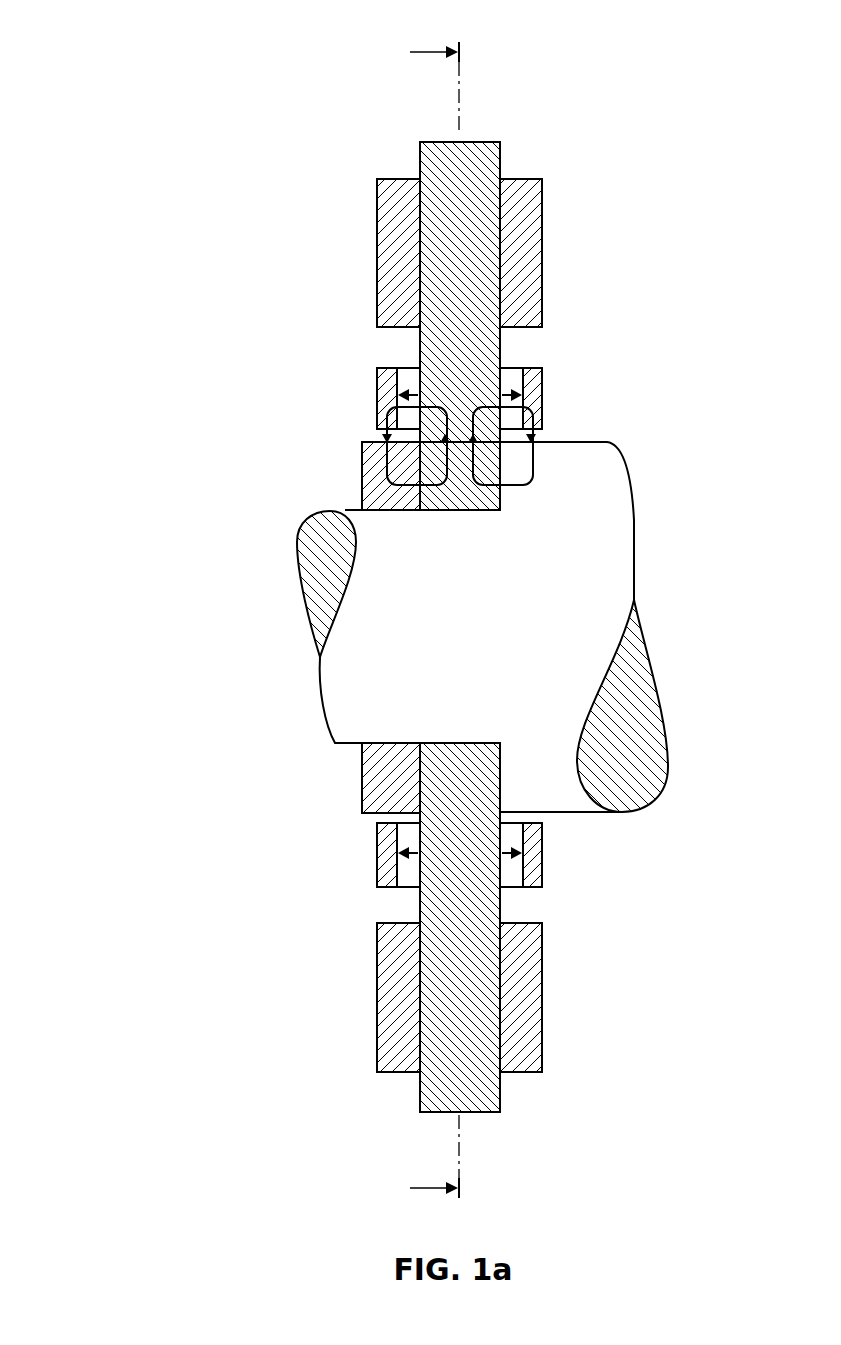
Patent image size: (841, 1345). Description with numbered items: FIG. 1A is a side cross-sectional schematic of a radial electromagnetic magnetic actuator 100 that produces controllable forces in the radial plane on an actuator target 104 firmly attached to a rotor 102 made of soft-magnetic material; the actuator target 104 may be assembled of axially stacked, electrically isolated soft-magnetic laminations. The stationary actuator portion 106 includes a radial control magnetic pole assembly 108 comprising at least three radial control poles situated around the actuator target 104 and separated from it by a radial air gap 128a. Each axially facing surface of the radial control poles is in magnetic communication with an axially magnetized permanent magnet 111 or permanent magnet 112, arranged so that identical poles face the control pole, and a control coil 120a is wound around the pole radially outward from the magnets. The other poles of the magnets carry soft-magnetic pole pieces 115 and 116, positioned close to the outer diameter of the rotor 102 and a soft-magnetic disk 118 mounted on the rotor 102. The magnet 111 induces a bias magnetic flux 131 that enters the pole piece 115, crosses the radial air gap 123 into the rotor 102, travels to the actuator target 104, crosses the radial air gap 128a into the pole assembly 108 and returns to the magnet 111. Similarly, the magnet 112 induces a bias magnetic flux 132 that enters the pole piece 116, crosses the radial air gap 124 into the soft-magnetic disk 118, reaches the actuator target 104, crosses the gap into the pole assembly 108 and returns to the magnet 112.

The magnetic actuator 100 is at (147, 46).
The rotor 102 is at (563, 560).
The actuator target 104 is at (460, 490).
The stationary actuator portion 106 is at (345, 152).
The radial control magnetic pole assembly 108 is at (483, 165).
The permanent magnet 111 is at (512, 373).
The permanent magnet 112 is at (403, 373).
The soft-magnetic pole piece 115 is at (536, 400).
The soft-magnetic pole piece 116 is at (386, 395).
The soft-magnetic disk 118 is at (372, 480).
The control coil 120a is at (530, 230).
The radial air gap 123 is at (532, 438).
The radial air gap 124 is at (386, 440).
The radial air gap 128a is at (460, 436).
The bias magnetic flux 131 is at (535, 452).
The bias magnetic flux 132 is at (393, 458).